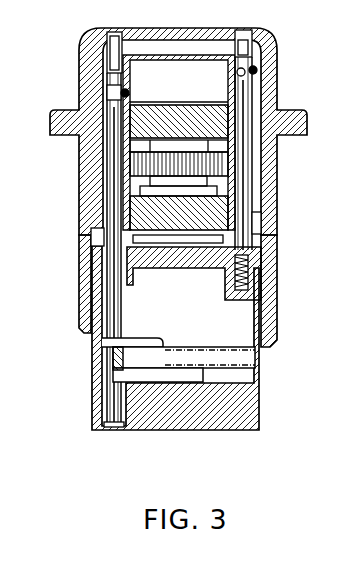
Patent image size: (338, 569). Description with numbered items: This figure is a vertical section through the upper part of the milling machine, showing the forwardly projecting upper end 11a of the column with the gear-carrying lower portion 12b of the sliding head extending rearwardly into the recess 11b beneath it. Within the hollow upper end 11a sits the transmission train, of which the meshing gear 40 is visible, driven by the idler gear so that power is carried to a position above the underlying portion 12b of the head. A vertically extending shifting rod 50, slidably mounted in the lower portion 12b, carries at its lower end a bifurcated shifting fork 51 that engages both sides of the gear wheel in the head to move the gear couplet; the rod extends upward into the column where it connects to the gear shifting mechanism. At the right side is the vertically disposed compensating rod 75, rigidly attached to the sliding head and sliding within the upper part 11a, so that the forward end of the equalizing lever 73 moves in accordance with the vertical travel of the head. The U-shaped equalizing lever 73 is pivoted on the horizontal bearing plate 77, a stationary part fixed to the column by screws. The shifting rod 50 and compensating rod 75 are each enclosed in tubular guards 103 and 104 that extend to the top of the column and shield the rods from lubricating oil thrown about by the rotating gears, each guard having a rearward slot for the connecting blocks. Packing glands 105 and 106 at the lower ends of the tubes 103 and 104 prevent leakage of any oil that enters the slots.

The forwardly projecting upper end of the column 11a is at (78, 160).
The recess 11b is at (90, 247).
The gear-carrying lower portion 12b is at (250, 413).
The meshing gear 40 is at (184, 167).
The shifting rod 50 is at (113, 316).
The shifting fork 51 is at (113, 373).
The equalizing lever 73 is at (166, 69).
The compensating rod 75 is at (242, 241).
The bearing plate 77 is at (159, 119).
The tubular guard 103 is at (106, 53).
The tubular guard 104 is at (256, 110).
The packing gland 105 is at (97, 230).
The packing gland 106 is at (254, 221).